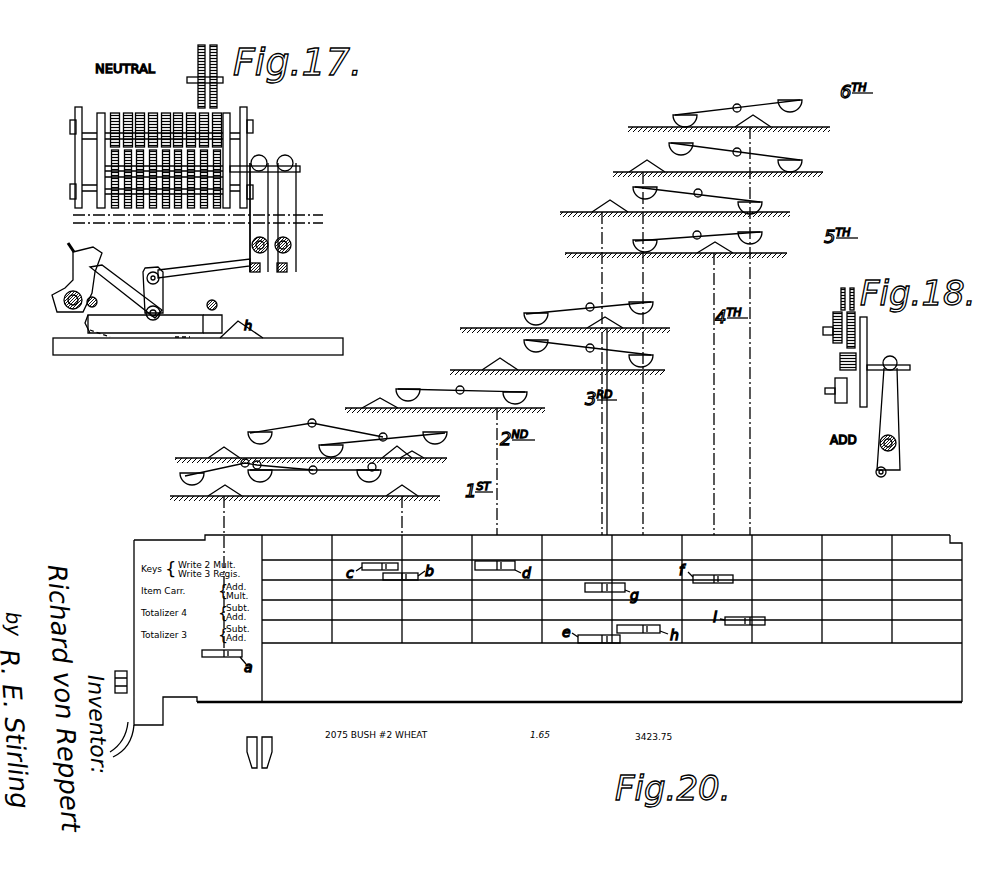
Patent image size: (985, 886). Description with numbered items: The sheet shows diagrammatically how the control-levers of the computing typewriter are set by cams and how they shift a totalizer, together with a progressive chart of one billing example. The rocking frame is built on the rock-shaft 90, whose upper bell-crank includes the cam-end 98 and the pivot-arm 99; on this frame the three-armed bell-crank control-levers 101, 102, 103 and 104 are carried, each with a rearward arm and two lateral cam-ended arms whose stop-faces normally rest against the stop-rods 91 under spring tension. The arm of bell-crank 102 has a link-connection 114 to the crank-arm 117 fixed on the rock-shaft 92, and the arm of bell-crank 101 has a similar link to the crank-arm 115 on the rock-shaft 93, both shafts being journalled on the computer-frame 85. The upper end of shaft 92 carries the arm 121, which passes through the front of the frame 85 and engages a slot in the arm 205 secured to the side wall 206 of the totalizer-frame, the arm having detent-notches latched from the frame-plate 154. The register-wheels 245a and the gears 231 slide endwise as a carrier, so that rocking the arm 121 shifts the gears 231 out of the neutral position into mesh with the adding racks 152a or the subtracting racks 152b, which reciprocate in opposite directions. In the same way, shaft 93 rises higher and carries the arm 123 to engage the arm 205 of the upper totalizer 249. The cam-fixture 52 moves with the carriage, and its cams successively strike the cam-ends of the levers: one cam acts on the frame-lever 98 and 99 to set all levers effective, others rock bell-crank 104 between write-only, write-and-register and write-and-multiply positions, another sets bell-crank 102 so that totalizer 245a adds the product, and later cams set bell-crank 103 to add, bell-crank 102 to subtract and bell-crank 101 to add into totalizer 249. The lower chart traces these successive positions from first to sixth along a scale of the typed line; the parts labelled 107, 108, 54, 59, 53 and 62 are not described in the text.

In FIG. 17, the gears 231 is at (170, 113).
In FIG. 18, the gears 231 is at (840, 350).
In FIG. 17, the driving rack 152a is at (218, 106).
In FIG. 18, the driving rack 152a is at (852, 288).
In FIG. 17, the driving rack 152b is at (206, 98).
In FIG. 18, the driving rack 152b is at (841, 298).
In FIG. 17, the side wall 206 is at (232, 150).
In FIG. 18, the side wall 206 is at (867, 344).
In FIG. 17, the frame-plate 154 is at (265, 159).
In FIG. 17, the arm 205 is at (290, 167).
In FIG. 18, the arm 205 is at (903, 366).
In FIG. 17, the arm 123 is at (288, 194).
In FIG. 17, the rock-shaft 92 is at (252, 245).
In FIG. 18, the rock-shaft 92 is at (897, 444).
In FIG. 17, the rock-shaft 93 is at (292, 245).
In FIG. 17, the crank-arm 115 is at (288, 268).
In FIG. 17, the arm 121 is at (250, 230).
In FIG. 18, the arm 121 is at (898, 402).
In FIG. 17, the totalizer 249 is at (166, 217).
In FIG. 17, the computer-frame 85 is at (172, 222).
In FIG. 17, the actuating lever 107 is at (97, 259).
In FIG. 17, the lever end 108 is at (60, 243).
In FIG. 17, the rock-shaft 90 is at (68, 309).
In FIG. 17, the stop-rods 91 is at (91, 297).
In FIG. 17, the pivot-arm 99 is at (114, 285).
In FIG. 17, the link-connection 114 is at (168, 272).
In FIG. 17, the crank-arm 117 is at (250, 262).
In FIG. 18, the crank-arm 117 is at (890, 470).
In FIG. 17, the bell-crank control-lever 102 is at (153, 322).
In FIG. 20, the bell-crank control-lever 102 is at (462, 393).
In FIG. 17, the cam-fixture 52 is at (290, 341).
In FIG. 20, the cam-fixture 52 is at (883, 716).
In FIG. 18, the register-wheels 245a is at (840, 403).
In FIG. 20, the bell-crank control-lever 101 is at (466, 341).
In FIG. 20, the bell-crank control-lever 103 is at (446, 393).
In FIG. 20, the bell-crank control-lever 104 is at (444, 405).
In FIG. 20, the cam-end 98 is at (303, 422).
In FIG. 20, the control panel 54 is at (133, 541).
In FIG. 20, the panel corner 59 is at (923, 538).
In FIG. 20, the program grid 53 is at (615, 618).
In FIG. 20, the curved guide 62 is at (128, 745).